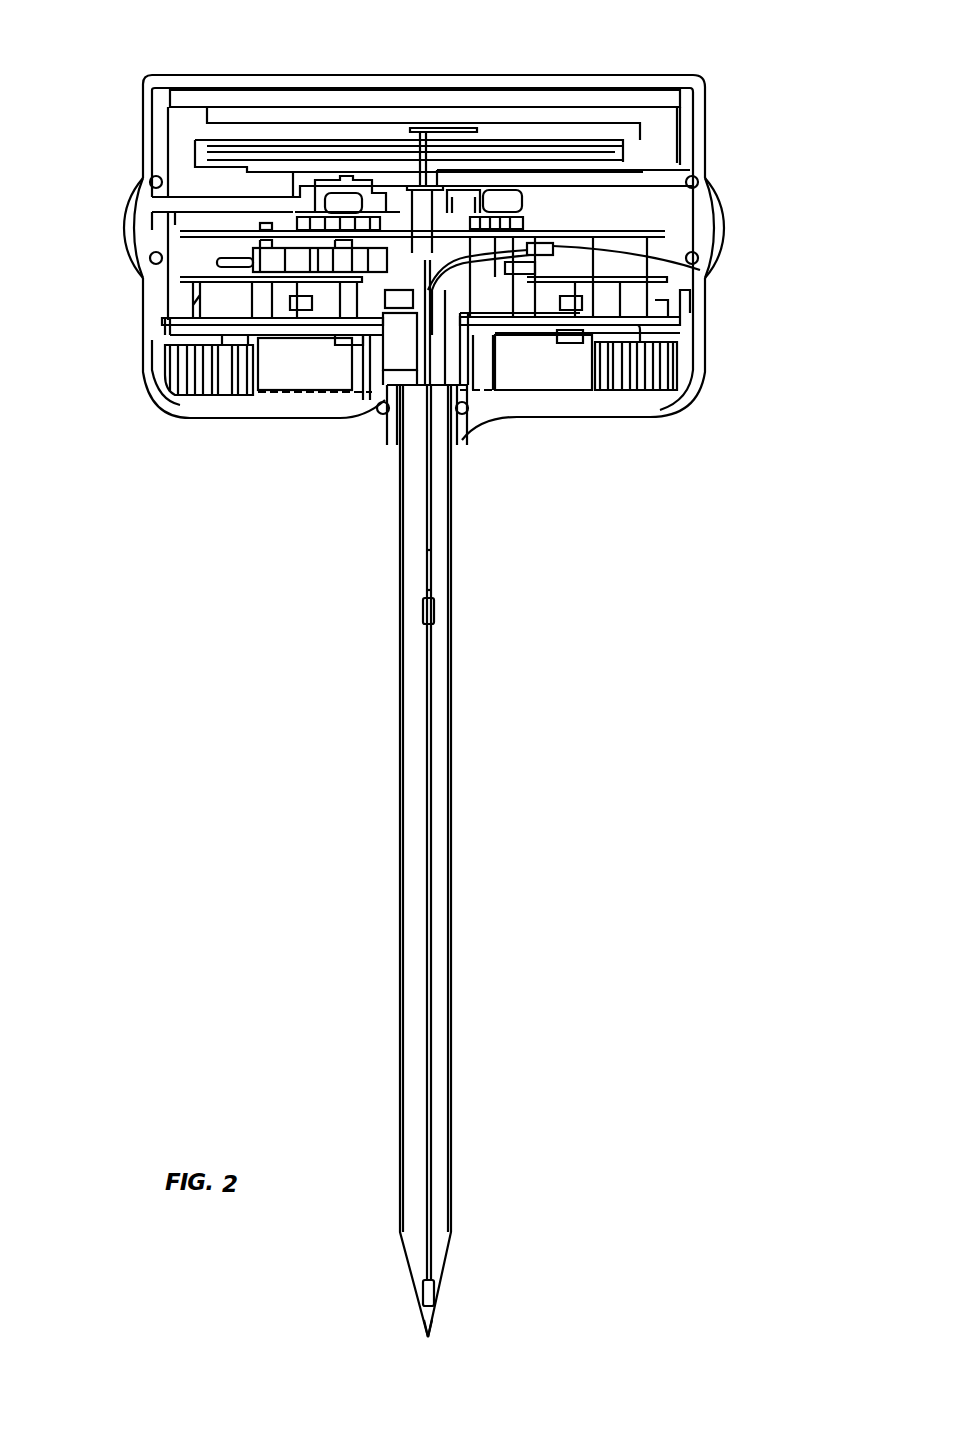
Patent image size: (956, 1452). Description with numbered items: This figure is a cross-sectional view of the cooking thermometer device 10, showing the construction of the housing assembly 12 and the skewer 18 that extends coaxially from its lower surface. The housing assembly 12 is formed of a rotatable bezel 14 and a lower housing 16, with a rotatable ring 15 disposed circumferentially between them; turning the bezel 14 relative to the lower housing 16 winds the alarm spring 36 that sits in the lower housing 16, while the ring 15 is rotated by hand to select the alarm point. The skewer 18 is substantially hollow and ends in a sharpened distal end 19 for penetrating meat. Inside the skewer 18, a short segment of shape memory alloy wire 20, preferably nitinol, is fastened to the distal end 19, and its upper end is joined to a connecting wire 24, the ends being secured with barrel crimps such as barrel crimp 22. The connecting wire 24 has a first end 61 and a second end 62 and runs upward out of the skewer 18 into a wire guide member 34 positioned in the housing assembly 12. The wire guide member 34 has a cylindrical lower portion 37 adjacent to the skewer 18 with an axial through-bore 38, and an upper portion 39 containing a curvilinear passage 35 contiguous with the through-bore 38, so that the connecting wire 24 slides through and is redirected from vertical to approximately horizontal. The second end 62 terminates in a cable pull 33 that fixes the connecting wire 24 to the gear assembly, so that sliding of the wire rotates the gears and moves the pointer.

The cooking thermometer device 10 is at (258, 572).
The housing assembly 12 is at (159, 478).
The rotatable bezel 14 is at (706, 130).
The rotatable ring 15 is at (722, 192).
The lower housing 16 is at (697, 345).
The skewer 18 is at (452, 850).
The sharpened distal end 19 is at (430, 1337).
The shape memory alloy wire 20 is at (430, 1006).
The barrel crimp 22 is at (433, 616).
The connecting wire 24 is at (432, 550).
The cable pull 33 is at (700, 270).
The wire guide member 34 is at (437, 277).
The curvilinear passage 35 is at (440, 325).
The alarm spring 36 is at (300, 370).
The cylindrical lower portion 37 is at (396, 354).
The through-bore 38 is at (422, 372).
The upper portion 39 is at (402, 300).
The first end 61 is at (428, 598).
The second end 62 is at (520, 262).